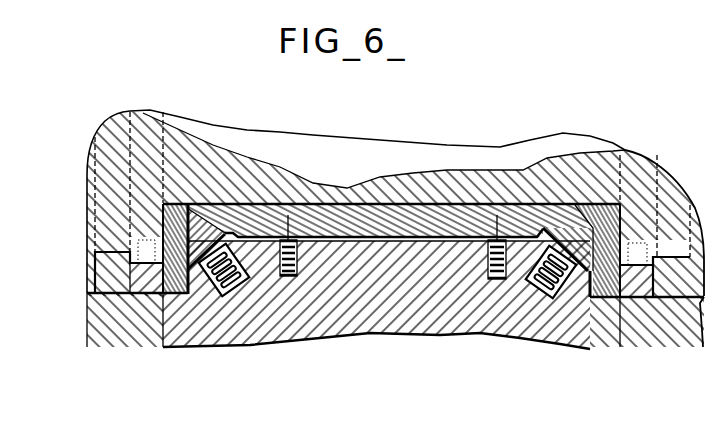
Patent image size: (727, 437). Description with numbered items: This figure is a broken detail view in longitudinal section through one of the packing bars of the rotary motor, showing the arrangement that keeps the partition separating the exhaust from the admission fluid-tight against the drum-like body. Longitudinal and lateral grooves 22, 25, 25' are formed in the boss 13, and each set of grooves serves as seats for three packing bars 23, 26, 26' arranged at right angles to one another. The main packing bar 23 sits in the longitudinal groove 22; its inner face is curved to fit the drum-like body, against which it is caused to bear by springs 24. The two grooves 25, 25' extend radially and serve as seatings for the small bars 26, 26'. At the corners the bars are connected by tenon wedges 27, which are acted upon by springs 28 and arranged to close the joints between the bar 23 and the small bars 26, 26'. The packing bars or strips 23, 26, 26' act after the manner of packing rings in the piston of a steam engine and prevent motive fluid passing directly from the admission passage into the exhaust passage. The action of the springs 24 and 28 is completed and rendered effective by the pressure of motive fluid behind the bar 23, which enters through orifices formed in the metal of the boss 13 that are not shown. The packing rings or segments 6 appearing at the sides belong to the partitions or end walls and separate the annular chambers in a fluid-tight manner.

The packing rings or segments 6 is at (120, 282).
The boss 13 is at (370, 318).
The longitudinal groove 22 is at (418, 241).
The packing bar 23 is at (453, 218).
The springs 24 is at (288, 276).
The lateral groove 25 is at (192, 316).
The lateral groove 25' is at (595, 341).
The small bar 26 is at (173, 297).
The small bar 26' is at (627, 293).
The tenon wedges 27 is at (203, 224).
The springs 28 is at (232, 297).